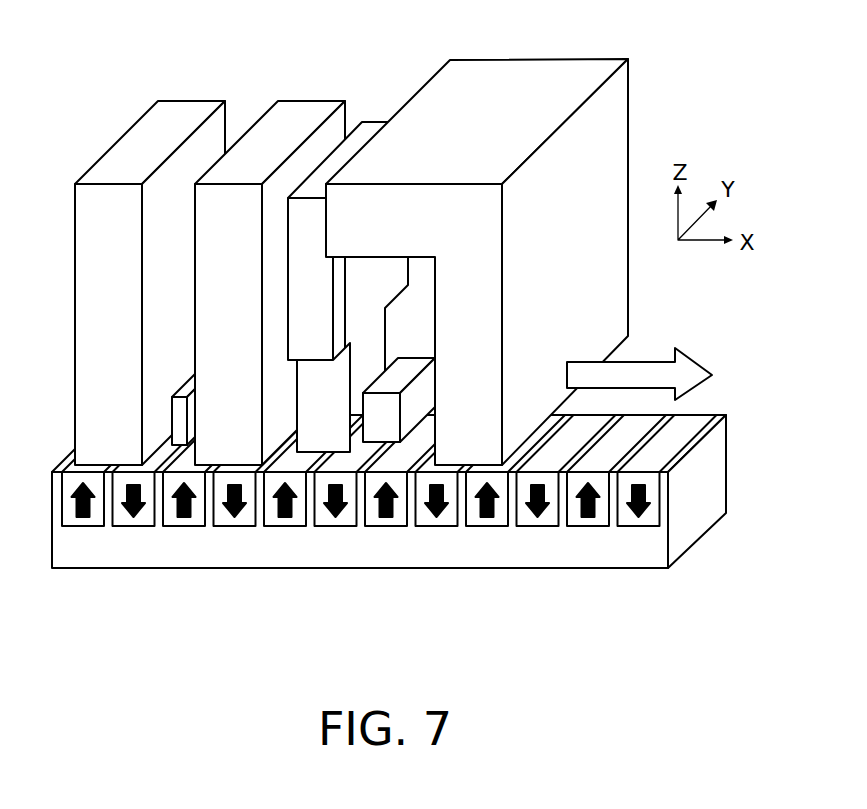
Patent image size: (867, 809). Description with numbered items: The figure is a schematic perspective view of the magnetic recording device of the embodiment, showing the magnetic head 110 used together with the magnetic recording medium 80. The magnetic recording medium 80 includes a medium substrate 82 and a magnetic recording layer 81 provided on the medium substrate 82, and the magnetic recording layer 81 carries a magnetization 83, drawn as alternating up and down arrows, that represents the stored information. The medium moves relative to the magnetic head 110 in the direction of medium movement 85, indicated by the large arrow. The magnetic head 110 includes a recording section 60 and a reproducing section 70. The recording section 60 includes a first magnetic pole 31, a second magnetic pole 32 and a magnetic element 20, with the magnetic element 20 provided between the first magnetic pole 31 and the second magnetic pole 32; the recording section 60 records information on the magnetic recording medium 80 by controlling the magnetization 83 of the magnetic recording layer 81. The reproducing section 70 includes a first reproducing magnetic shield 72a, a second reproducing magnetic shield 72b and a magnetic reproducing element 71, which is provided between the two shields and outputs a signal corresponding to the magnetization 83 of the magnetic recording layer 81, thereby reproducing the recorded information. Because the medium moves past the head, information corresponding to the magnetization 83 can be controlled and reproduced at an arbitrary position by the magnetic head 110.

The magnetic head 110 is at (667, 77).
The reproducing section 70 is at (214, 232).
The magnetic reproducing element 71 is at (180, 388).
The first reproducing magnetic shield 72a is at (177, 117).
The second reproducing magnetic shield 72b is at (177, 38).
The recording section 60 is at (373, 406).
The first magnetic pole 31 is at (327, 437).
The magnetic element 20 is at (383, 425).
The second magnetic pole 32 is at (472, 437).
The magnetic recording medium 80 is at (389, 543).
The magnetic recording layer 81 is at (82, 528).
The medium substrate 82 is at (125, 545).
The magnetization 83 is at (184, 553).
The direction of medium movement 85 is at (648, 368).